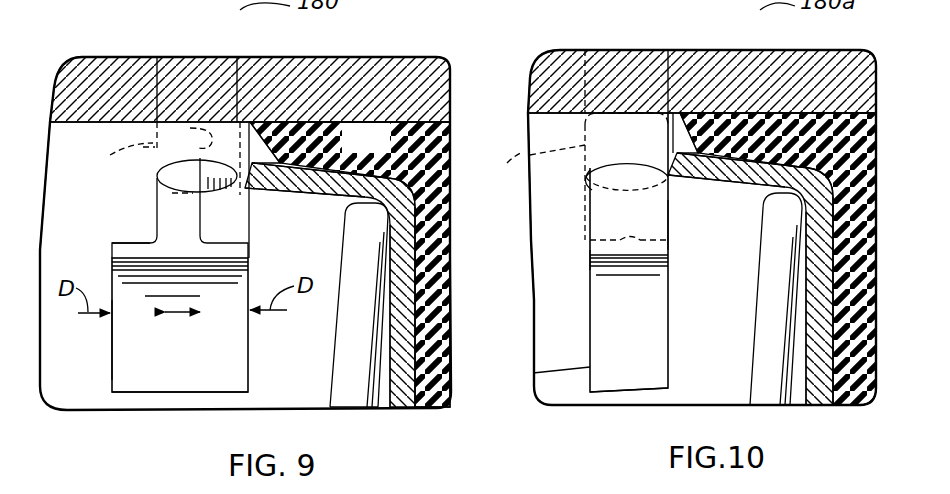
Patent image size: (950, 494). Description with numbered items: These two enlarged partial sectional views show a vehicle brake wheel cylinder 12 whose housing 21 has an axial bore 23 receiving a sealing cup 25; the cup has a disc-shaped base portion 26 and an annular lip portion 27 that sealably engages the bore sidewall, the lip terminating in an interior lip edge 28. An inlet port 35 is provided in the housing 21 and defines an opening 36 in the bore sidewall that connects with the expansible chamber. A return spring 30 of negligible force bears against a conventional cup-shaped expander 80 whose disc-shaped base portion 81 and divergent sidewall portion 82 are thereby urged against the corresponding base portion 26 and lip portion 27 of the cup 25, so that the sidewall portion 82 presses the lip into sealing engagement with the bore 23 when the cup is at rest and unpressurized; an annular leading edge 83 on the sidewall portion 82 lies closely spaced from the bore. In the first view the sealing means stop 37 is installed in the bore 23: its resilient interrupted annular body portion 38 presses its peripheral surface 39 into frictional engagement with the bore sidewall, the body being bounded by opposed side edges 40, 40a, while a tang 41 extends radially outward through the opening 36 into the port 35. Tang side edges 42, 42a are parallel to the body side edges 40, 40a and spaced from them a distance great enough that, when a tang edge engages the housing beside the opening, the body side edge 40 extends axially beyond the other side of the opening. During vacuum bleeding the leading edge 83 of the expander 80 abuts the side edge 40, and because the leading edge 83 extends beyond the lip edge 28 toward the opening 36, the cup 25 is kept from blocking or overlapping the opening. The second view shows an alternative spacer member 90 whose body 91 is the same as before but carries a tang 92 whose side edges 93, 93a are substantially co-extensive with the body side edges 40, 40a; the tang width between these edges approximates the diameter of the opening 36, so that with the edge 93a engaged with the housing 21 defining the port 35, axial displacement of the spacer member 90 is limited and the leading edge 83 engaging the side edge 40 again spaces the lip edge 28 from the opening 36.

In FIG. 9, the wheel cylinder 12 is at (265, 211).
In FIG. 10, the wheel cylinder 12 is at (704, 208).
In FIG. 9, the housing 21 is at (61, 70).
In FIG. 10, the housing 21 is at (523, 70).
In FIG. 9, the axial bore 23 is at (123, 125).
In FIG. 10, the axial bore 23 is at (550, 117).
In FIG. 9, the wheel cylinder cup 25 is at (456, 143).
In FIG. 10, the wheel cylinder cup 25 is at (880, 125).
In FIG. 9, the base portion 26 is at (453, 264).
In FIG. 10, the base portion 26 is at (878, 197).
In FIG. 9, the lip portion 27 is at (380, 152).
In FIG. 10, the lip portion 27 is at (776, 259).
In FIG. 10, the lip edge 28 is at (670, 110).
In FIG. 9, the return spring 30 is at (358, 405).
In FIG. 10, the return spring 30 is at (772, 230).
In FIG. 9, the inlet port 35 is at (172, 53).
In FIG. 10, the inlet port 35 is at (600, 50).
In FIG. 9, the opening 36 is at (157, 180).
In FIG. 10, the opening 36 is at (596, 190).
In FIG. 9, the sealing means stop 37 is at (110, 358).
In FIG. 9, the body portion 38 is at (177, 393).
In FIG. 9, the peripheral surface 39 is at (120, 243).
In FIG. 10, the peripheral surface 39 is at (643, 243).
In FIG. 9, the side edge 40 is at (252, 368).
In FIG. 10, the side edge 40 is at (668, 338).
In FIG. 9, the side edge 40a is at (112, 390).
In FIG. 10, the side edge 40a is at (545, 374).
In FIG. 9, the tang 41 is at (183, 228).
In FIG. 9, the tang side edge 42 is at (214, 118).
In FIG. 10, the tang side edge 42 is at (626, 176).
In FIG. 9, the tang side edge 42a is at (126, 187).
In FIG. 9, the expander 80 is at (420, 387).
In FIG. 10, the expander 80 is at (838, 262).
In FIG. 9, the base portion 81 is at (412, 342).
In FIG. 10, the base portion 81 is at (820, 338).
In FIG. 9, the sidewall portion 82 is at (290, 188).
In FIG. 10, the sidewall portion 82 is at (745, 178).
In FIG. 9, the leading edge 83 is at (250, 235).
In FIG. 10, the leading edge 83 is at (670, 305).
In FIG. 10, the spacer member 90 is at (586, 281).
In FIG. 10, the body 91 is at (618, 378).
In FIG. 10, the tang 92 is at (592, 220).
In FIG. 10, the tang side edge 93 is at (670, 225).
In FIG. 10, the tang side edge 93a is at (525, 198).